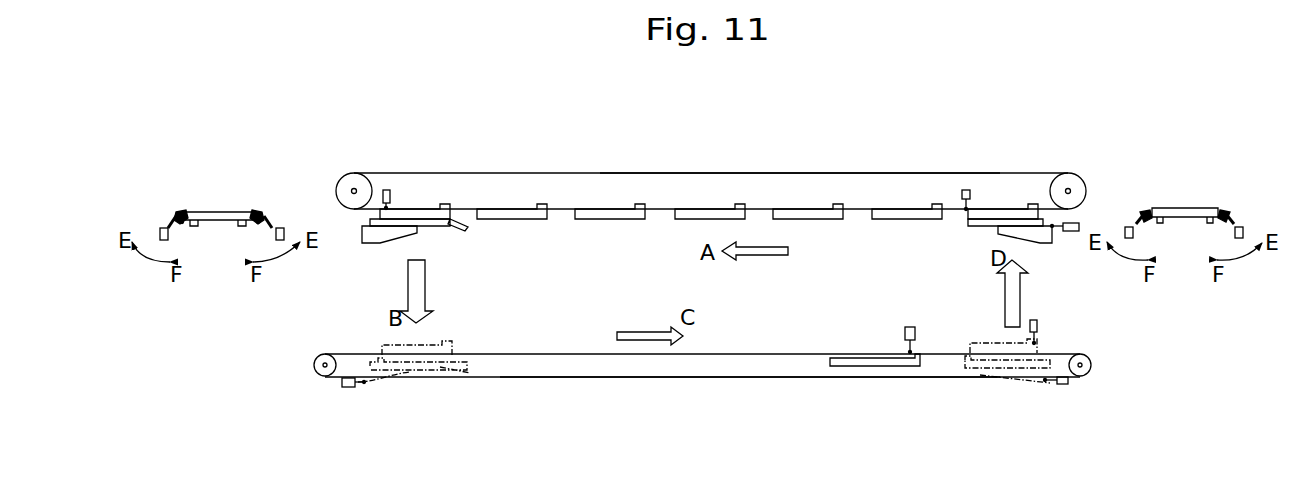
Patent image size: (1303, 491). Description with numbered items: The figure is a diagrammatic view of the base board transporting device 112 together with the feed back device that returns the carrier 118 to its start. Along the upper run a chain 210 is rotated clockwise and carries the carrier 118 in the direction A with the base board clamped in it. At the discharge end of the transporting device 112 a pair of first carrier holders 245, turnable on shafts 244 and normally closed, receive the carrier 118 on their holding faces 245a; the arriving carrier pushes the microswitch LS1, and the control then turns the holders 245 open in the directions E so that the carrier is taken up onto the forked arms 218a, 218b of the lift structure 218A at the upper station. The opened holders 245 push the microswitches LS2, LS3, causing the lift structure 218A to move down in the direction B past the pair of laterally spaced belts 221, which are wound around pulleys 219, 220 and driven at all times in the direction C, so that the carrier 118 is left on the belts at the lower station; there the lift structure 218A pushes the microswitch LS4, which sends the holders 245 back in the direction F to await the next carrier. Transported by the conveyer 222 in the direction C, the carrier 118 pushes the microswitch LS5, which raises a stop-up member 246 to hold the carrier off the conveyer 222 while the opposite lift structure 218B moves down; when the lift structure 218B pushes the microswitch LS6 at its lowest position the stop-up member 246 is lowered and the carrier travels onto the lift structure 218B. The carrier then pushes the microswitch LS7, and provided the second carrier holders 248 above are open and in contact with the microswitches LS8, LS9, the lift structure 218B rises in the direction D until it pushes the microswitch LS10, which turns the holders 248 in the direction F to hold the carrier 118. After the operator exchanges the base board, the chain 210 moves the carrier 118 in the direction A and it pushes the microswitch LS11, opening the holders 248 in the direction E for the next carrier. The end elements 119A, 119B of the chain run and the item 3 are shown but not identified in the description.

The lower conveyor 3 is at (972, 380).
The transporting device 112 is at (1036, 166).
The carrier 118 is at (437, 208).
The pulley 119A is at (1052, 176).
The pulley 119B is at (370, 176).
The chain 210 is at (950, 173).
The lift structure 218A is at (366, 244).
The lift structure 218B is at (1000, 233).
The forked arm 218a is at (968, 232).
The forked arm 218b is at (445, 224).
The pulley 219 is at (315, 368).
The pulley 220 is at (1092, 367).
The belt 221 is at (603, 378).
The conveyer 222 is at (773, 381).
The shaft 244 is at (180, 214).
The first carrier holder 245 is at (175, 214).
The holding face 245a is at (186, 222).
The stop-up member 246 is at (887, 368).
The second carrier holder 248 is at (1222, 210).
The microswitch LS1 is at (388, 189).
The microswitch LS2 is at (160, 232).
The microswitch LS3 is at (285, 232).
The microswitch LS4 is at (348, 388).
The microswitch LS5 is at (911, 326).
The microswitch LS6 is at (1063, 385).
The microswitch LS7 is at (1040, 323).
The microswitch LS8 is at (1128, 226).
The microswitch LS9 is at (1243, 230).
The microswitch LS10 is at (1072, 232).
The microswitch LS11 is at (978, 189).